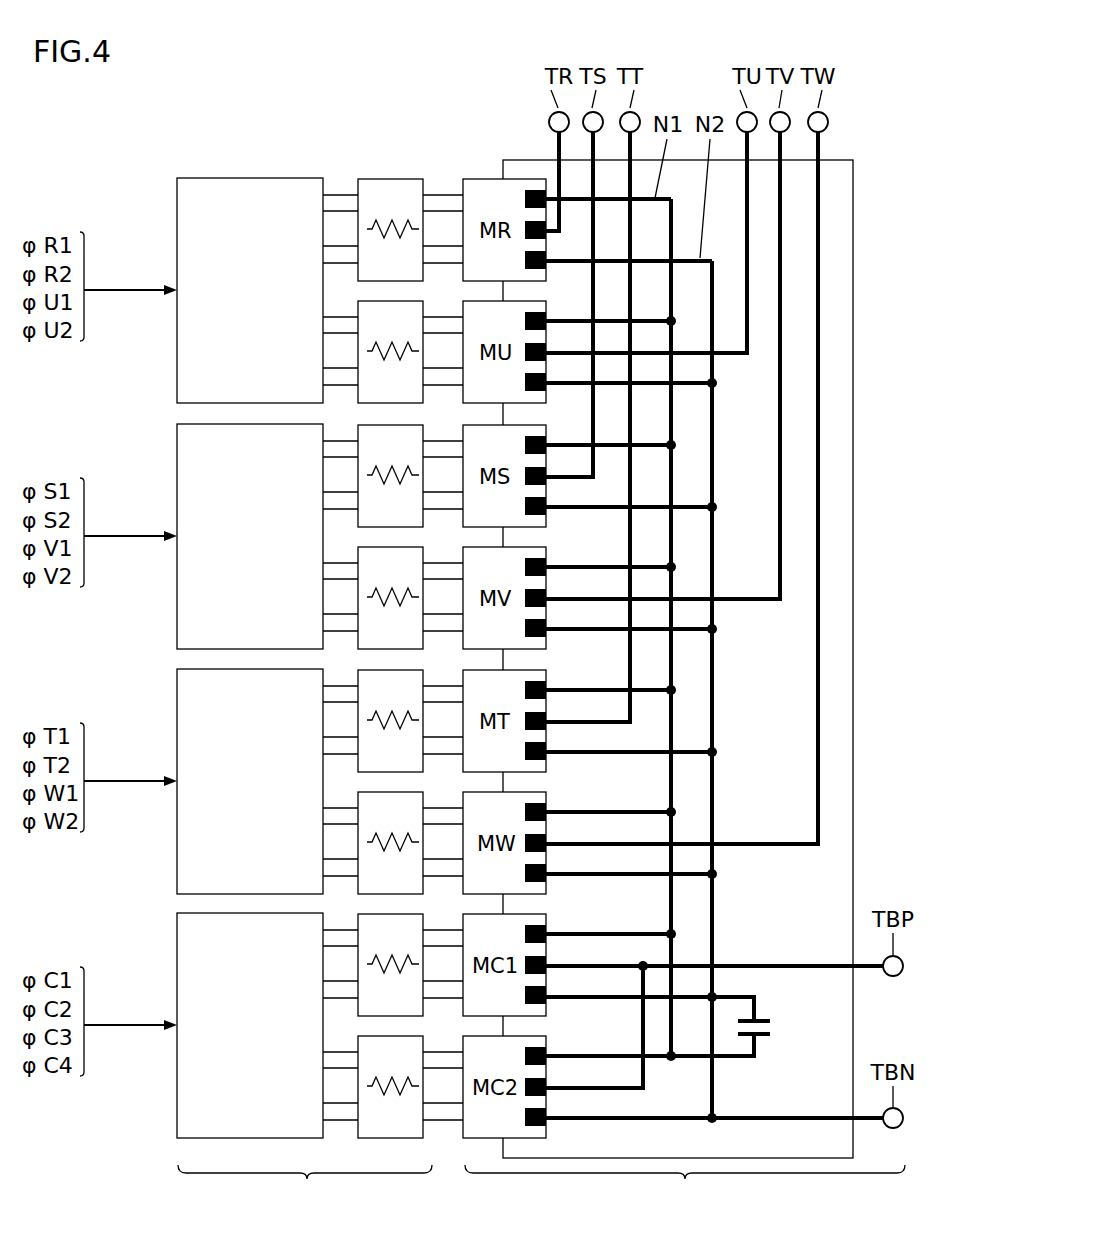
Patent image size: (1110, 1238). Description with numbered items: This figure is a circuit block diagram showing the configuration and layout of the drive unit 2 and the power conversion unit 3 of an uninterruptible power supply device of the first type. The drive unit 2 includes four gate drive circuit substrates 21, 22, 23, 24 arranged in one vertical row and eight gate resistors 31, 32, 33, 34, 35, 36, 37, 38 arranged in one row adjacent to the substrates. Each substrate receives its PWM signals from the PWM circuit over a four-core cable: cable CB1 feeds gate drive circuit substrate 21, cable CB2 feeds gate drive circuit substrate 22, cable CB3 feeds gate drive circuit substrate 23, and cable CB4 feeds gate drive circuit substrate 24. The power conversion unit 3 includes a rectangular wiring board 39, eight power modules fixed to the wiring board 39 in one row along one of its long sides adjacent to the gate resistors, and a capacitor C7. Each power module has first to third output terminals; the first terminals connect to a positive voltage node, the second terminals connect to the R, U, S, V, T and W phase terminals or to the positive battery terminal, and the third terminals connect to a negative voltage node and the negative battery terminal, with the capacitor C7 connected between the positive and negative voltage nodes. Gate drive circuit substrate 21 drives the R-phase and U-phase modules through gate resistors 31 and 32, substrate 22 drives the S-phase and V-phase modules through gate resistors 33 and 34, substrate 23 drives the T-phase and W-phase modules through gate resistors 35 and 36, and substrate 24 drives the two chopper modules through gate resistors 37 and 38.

The drive unit 2 is at (305, 1186).
The power conversion unit 3 is at (685, 1186).
The gate drive circuit substrate 21 is at (177, 370).
The gate drive circuit substrate 22 is at (177, 616).
The gate drive circuit substrate 23 is at (177, 861).
The gate drive circuit substrate 24 is at (177, 1105).
The gate resistor 31 is at (357, 189).
The gate resistor 32 is at (357, 311).
The gate resistor 33 is at (357, 435).
The gate resistor 34 is at (357, 557).
The gate resistor 35 is at (357, 680).
The gate resistor 36 is at (357, 802).
The gate resistor 37 is at (357, 924).
The gate resistor 38 is at (357, 1046).
The wiring board 39 is at (517, 158).
The capacitor C7 is at (770, 1036).
The four-core cable CB1 is at (126, 286).
The four-core cable CB2 is at (126, 532).
The four-core cable CB3 is at (126, 777).
The four-core cable CB4 is at (126, 1021).